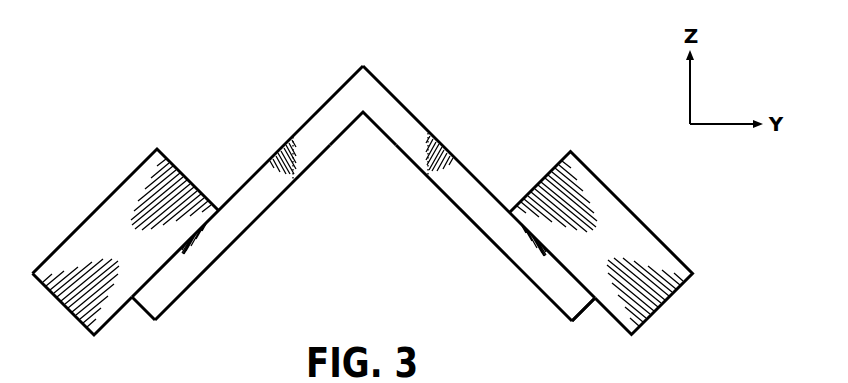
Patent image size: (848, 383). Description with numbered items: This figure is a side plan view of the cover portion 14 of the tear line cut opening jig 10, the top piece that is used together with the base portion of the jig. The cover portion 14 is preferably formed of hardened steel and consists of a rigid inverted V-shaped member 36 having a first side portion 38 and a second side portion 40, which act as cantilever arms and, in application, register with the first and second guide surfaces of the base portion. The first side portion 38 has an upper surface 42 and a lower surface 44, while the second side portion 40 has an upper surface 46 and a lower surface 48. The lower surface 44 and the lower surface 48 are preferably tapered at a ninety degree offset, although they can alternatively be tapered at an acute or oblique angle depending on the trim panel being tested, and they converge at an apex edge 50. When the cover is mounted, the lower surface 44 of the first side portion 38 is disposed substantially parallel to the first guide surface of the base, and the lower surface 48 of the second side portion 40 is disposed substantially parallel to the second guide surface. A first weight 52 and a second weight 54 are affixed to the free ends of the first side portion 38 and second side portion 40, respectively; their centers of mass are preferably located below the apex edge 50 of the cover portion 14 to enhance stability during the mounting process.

The tear line cut opening jig 10 is at (137, 125).
The cover portion 14 is at (412, 114).
The inverted V-shaped member 36 is at (460, 210).
The first side portion 38 is at (248, 193).
The second side portion 40 is at (503, 238).
The upper surface 42 is at (307, 120).
The lower surface 44 is at (247, 230).
The upper surface 46 is at (478, 195).
The lower surface 48 is at (547, 300).
The apex edge 50 is at (363, 116).
The first weight 52 is at (72, 253).
The second weight 54 is at (653, 252).